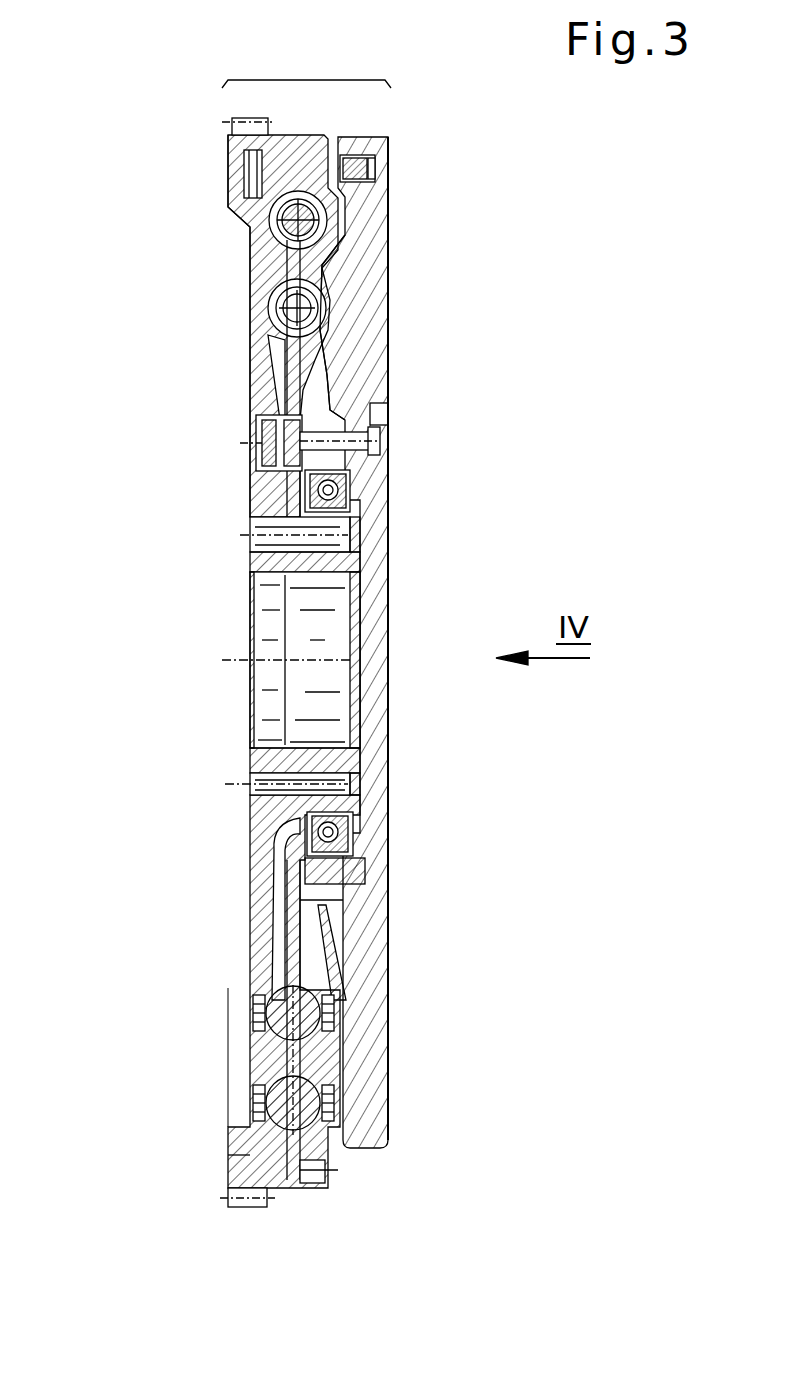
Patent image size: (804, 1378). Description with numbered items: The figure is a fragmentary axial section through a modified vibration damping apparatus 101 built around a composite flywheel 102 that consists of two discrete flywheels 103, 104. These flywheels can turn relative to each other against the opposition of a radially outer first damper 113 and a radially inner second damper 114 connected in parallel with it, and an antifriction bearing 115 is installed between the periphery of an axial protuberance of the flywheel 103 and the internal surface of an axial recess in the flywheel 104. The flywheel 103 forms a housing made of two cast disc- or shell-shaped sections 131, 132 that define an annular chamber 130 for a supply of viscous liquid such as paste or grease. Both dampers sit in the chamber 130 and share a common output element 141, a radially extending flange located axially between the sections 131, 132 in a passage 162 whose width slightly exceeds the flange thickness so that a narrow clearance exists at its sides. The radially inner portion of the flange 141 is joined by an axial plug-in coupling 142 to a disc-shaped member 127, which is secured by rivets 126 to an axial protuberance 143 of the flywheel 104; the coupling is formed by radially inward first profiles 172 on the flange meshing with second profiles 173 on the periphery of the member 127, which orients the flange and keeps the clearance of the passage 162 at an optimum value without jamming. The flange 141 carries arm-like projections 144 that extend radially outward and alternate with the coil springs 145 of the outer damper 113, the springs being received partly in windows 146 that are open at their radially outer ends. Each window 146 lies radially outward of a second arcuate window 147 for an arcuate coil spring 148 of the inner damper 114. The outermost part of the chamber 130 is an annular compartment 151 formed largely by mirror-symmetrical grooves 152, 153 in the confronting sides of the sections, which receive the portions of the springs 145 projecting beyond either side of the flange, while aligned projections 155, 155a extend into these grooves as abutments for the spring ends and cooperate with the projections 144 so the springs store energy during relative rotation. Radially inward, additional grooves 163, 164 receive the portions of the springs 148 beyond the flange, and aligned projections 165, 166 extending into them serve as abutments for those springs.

The vibration damping apparatus 101 is at (556, 176).
The composite flywheel 102 is at (306, 66).
The flywheel 103 is at (250, 262).
The flywheel 104 is at (387, 215).
The first damper 113 is at (236, 227).
The second damper 114 is at (253, 333).
The antifriction bearing 115 is at (300, 515).
The rivets 126 is at (387, 427).
The disc-shaped member 127 is at (295, 858).
The annular chamber 130 is at (253, 368).
The section 131 is at (257, 880).
The section 132 is at (312, 980).
The output element 141 is at (387, 352).
The axial plug-in coupling 142 is at (253, 427).
The axial protuberance 143 is at (335, 872).
The projections 144 is at (262, 1113).
The coil springs 145 is at (253, 202).
The windows 146 is at (428, 117).
The second arcuate window 147 is at (387, 295).
The coil spring 148 is at (387, 310).
The annular compartment 151 is at (387, 147).
The groove 152 is at (253, 207).
The groove 153 is at (387, 175).
The projection 155 is at (262, 1093).
The projection 155a is at (343, 1088).
The passage 162 is at (387, 238).
The groove 163 is at (258, 290).
The groove 164 is at (387, 268).
The projection 165 is at (262, 1008).
The projection 166 is at (340, 1003).
The first profiles 172 is at (318, 905).
The second profiles 173 is at (387, 395).